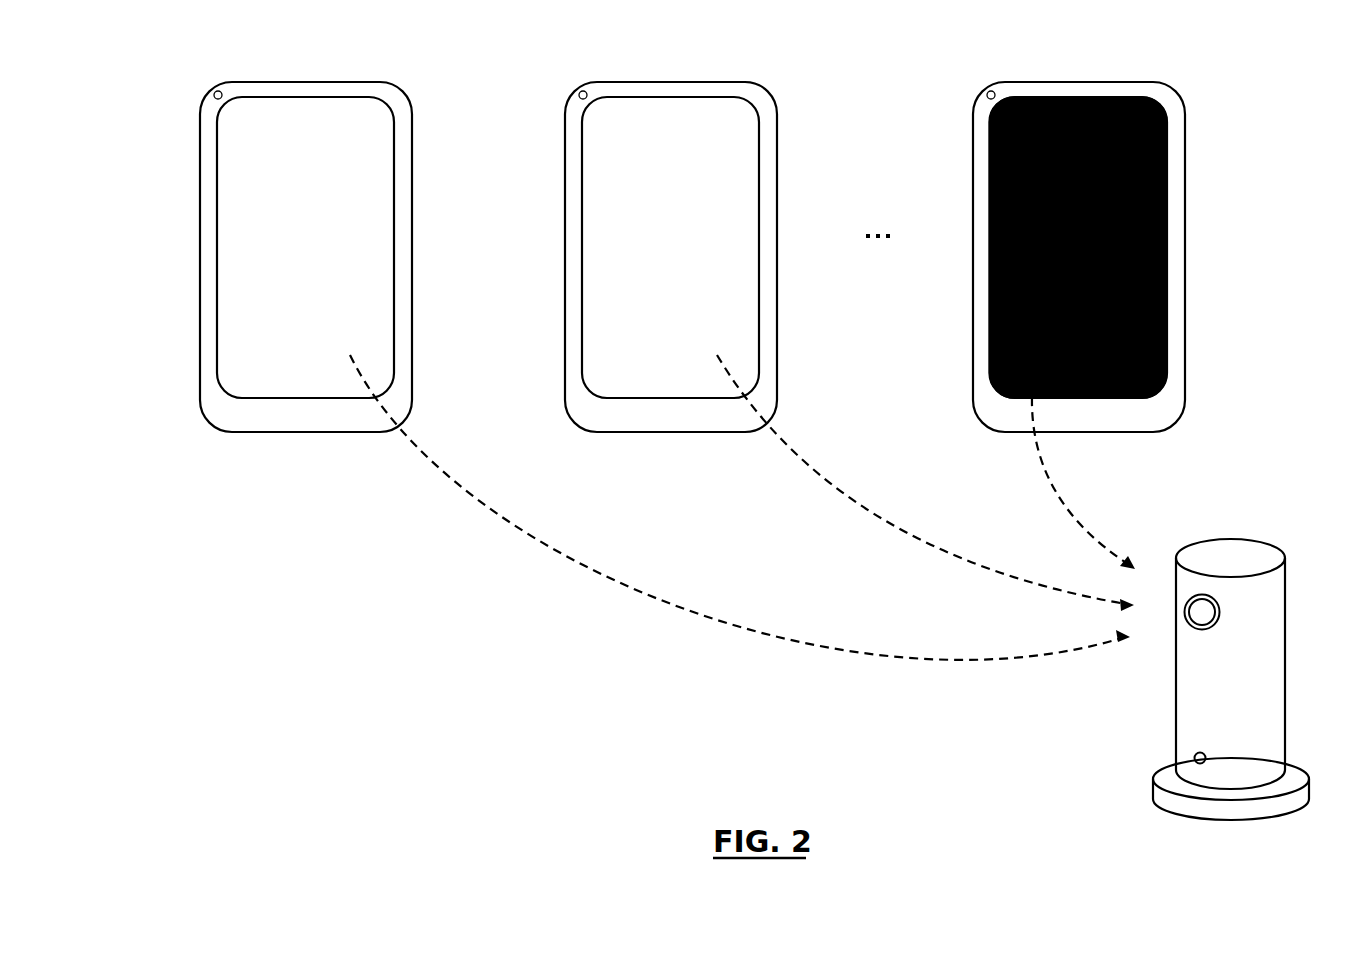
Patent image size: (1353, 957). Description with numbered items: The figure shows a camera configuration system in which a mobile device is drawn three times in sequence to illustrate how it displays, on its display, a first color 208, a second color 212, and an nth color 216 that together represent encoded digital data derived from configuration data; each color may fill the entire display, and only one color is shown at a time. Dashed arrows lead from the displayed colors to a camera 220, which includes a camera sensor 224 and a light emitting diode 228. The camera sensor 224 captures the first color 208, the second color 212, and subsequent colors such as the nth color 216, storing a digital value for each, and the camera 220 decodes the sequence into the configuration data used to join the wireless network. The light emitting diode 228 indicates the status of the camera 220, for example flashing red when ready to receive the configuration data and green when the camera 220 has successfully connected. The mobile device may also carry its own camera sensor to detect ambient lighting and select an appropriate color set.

The first color 208 is at (367, 229).
The second color 212 is at (717, 247).
The nth color 216 is at (1124, 247).
The camera 220 is at (1285, 641).
The camera sensor 224 is at (1197, 630).
The light emitting diode (LED) 228 is at (1194, 756).